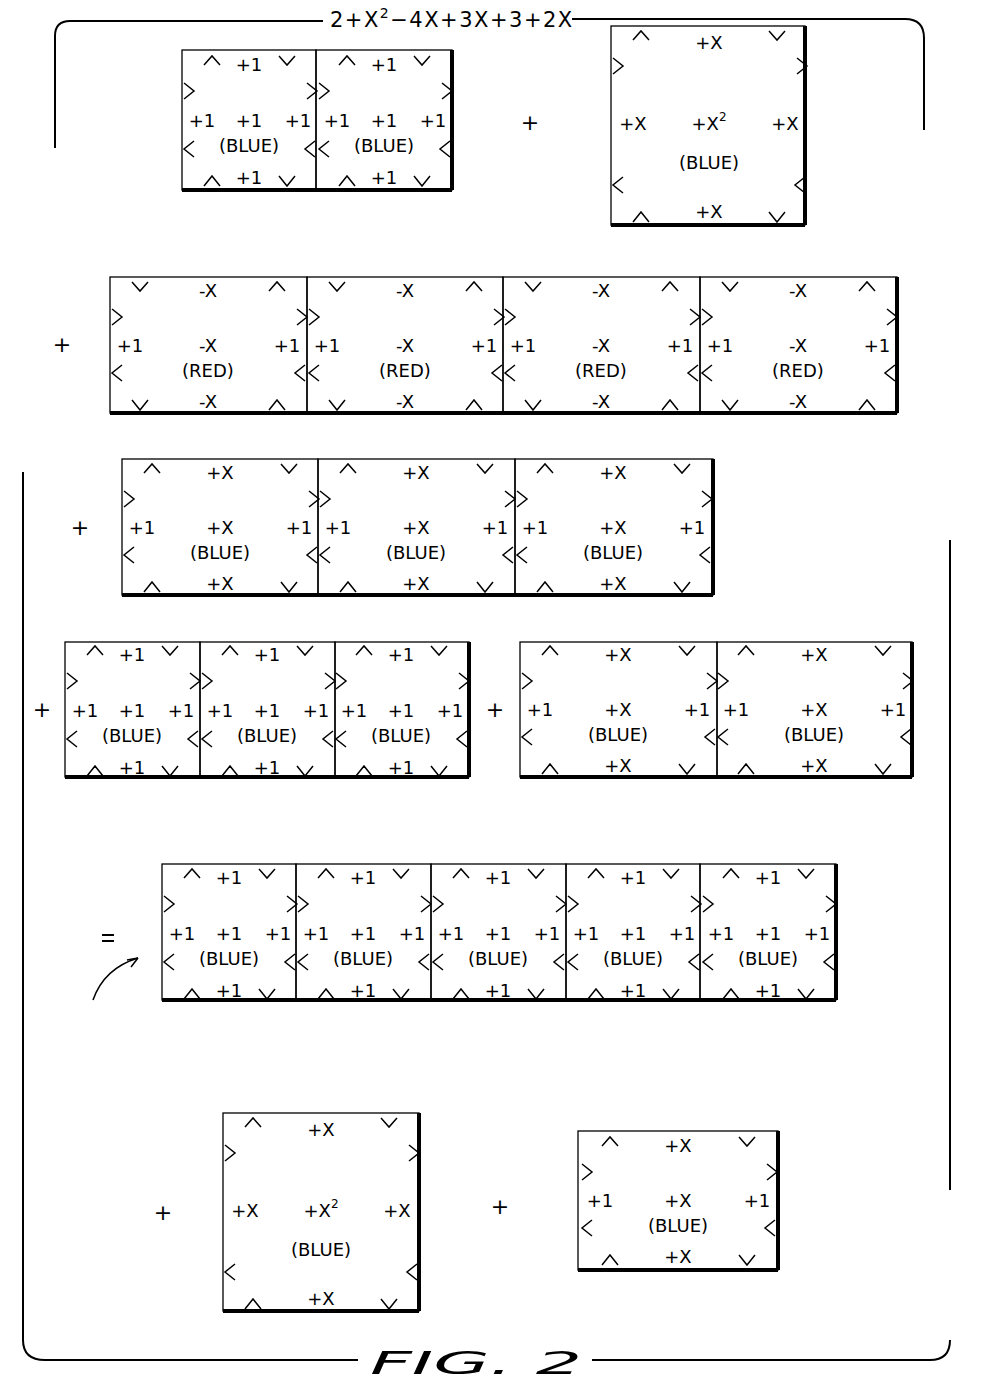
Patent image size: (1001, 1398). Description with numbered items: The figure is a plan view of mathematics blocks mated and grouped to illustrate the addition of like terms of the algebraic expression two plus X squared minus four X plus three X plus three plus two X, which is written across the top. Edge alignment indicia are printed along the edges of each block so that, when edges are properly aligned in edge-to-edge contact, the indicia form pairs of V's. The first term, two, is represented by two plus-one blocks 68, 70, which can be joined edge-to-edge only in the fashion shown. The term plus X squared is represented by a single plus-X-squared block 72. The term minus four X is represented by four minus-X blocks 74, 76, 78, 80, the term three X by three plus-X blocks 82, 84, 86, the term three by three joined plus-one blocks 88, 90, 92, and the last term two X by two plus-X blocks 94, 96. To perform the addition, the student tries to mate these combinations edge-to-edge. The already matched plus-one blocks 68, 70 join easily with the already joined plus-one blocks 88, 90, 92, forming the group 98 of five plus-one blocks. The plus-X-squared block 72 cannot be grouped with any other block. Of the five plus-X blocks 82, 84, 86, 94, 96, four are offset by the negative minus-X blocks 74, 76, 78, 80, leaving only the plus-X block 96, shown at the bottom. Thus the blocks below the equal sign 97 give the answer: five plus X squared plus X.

The +1 block 68 is at (296, 191).
The +1 block 70 is at (453, 188).
The +X² block 72 is at (806, 192).
The -X block 74 is at (218, 277).
The -X block 76 is at (432, 277).
The -X block 78 is at (608, 277).
The -X block 80 is at (795, 277).
The +X block 82 is at (238, 459).
The +X block 84 is at (410, 459).
The +X block 86 is at (622, 459).
The +1 block 88 is at (148, 642).
The +1 block 90 is at (288, 642).
The +1 block 92 is at (416, 642).
The +X block 94 is at (612, 642).
The +X block 96 is at (832, 642).
The equal sign 97 is at (108, 930).
The group of +1 blocks 98 is at (107, 992).